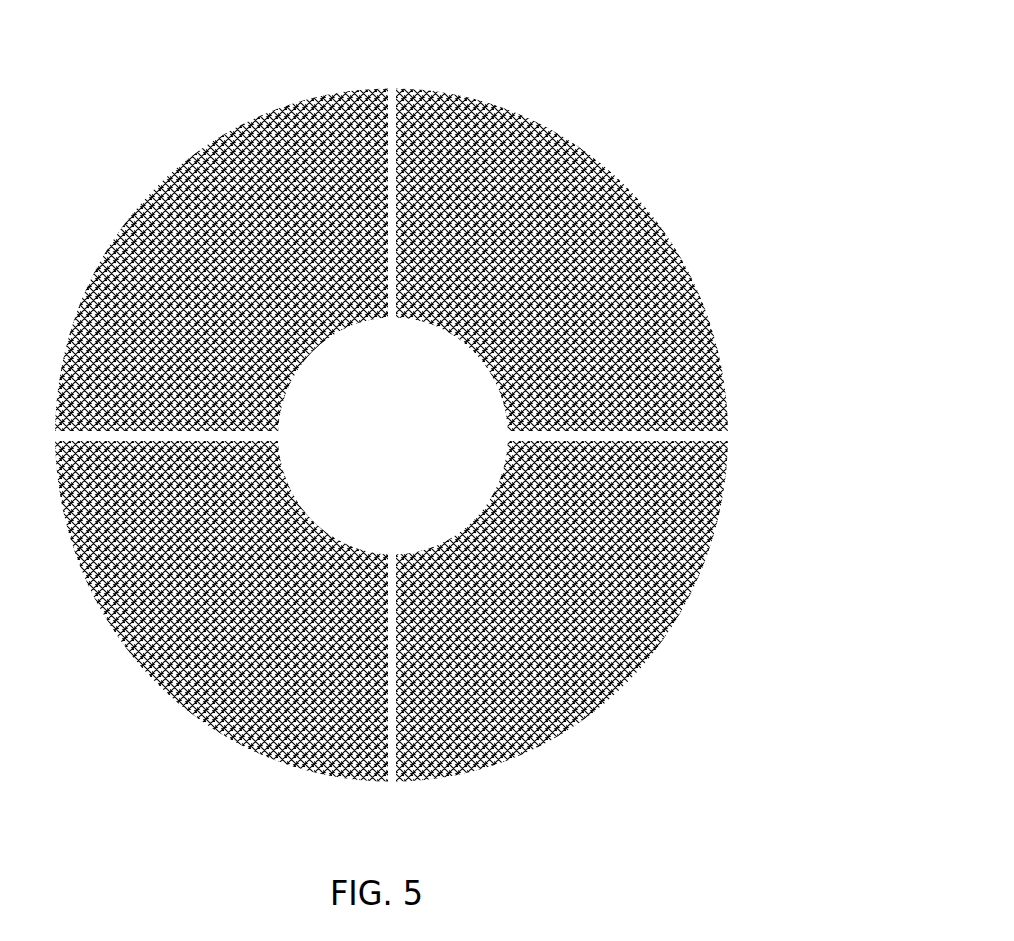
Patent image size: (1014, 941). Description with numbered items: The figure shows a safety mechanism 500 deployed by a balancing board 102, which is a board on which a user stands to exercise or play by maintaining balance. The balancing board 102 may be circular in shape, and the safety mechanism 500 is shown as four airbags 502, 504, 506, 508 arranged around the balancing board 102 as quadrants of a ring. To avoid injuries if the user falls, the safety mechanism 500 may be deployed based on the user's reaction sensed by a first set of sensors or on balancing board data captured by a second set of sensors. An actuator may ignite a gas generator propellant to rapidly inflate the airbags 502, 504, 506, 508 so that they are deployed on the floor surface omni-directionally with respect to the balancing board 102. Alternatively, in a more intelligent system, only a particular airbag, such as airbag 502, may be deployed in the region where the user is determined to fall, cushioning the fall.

The safety mechanism 500 is at (392, 418).
The airbag 502 is at (652, 207).
The airbag 504 is at (143, 186).
The airbag 506 is at (133, 666).
The airbag 508 is at (603, 696).
The balancing board 102 is at (382, 430).